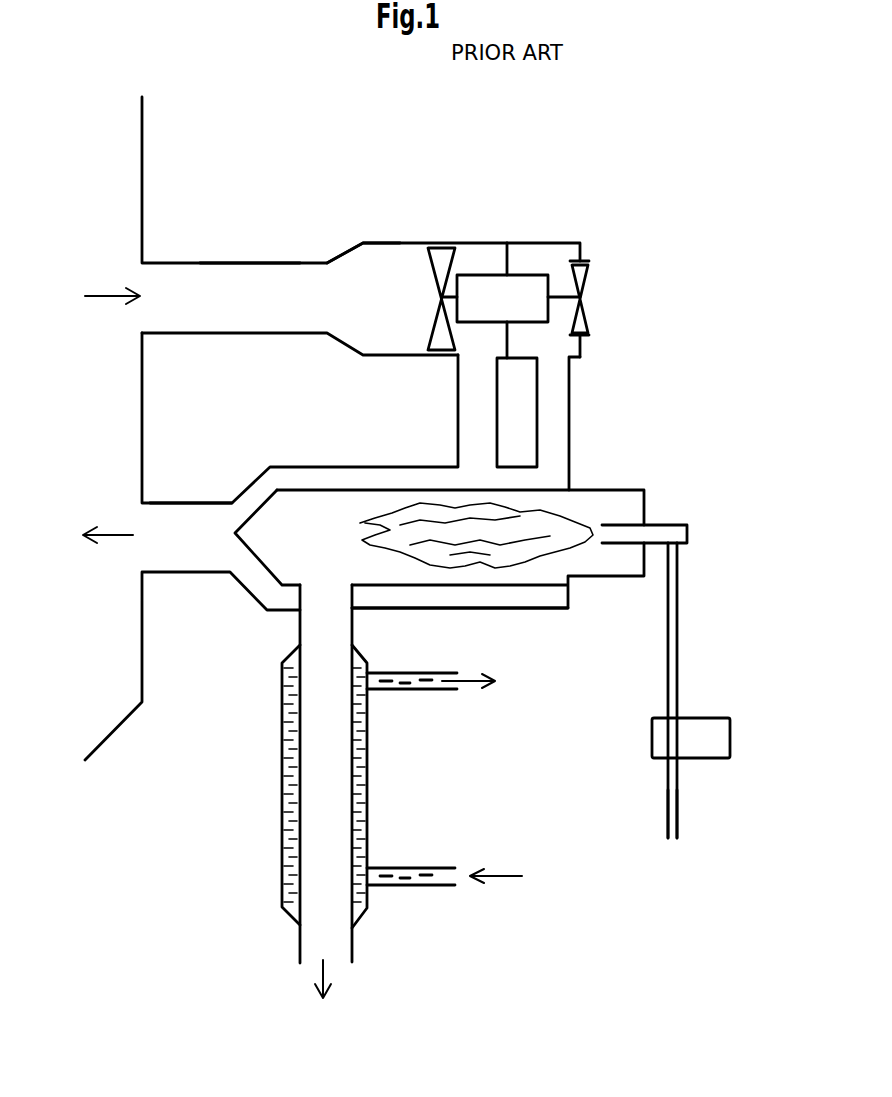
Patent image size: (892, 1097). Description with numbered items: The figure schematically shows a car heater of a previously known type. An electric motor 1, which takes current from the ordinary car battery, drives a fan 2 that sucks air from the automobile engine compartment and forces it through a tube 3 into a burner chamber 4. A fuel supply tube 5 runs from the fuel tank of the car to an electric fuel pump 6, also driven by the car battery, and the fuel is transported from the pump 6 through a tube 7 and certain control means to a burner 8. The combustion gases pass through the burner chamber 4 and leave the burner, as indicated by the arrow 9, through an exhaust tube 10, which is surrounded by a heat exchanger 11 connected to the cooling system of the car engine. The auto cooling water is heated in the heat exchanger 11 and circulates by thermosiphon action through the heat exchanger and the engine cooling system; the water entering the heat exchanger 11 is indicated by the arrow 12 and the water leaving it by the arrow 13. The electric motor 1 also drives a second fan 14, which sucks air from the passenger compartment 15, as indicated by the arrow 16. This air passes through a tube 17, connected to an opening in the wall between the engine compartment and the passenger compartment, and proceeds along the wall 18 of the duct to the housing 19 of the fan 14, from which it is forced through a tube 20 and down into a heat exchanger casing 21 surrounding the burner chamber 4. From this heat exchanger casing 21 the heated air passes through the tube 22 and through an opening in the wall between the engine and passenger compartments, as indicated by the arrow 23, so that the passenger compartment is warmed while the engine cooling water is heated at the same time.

The electric motor 1 is at (515, 288).
The fan 2 is at (586, 321).
The tube 3 is at (569, 395).
The burner chamber 4 is at (307, 490).
The fuel supply tube 5 is at (677, 810).
The electric fuel pump 6 is at (708, 727).
The tube 7 is at (677, 629).
The burner 8 is at (662, 525).
The arrow 9 is at (323, 968).
The exhaust tube 10 is at (352, 632).
The heat exchanger 11 is at (367, 765).
The arrow 12 is at (487, 874).
The arrow 13 is at (470, 683).
The fan 14 is at (440, 258).
The passenger compartment 15 is at (260, 296).
The arrow 16 is at (95, 298).
The tube 17 is at (213, 263).
The duct outer wall 18 is at (142, 165).
The housing 19 is at (378, 243).
The tube 20 is at (458, 403).
The heat exchanger casing 21 is at (242, 587).
The tube 22 is at (207, 503).
The arrow 23 is at (107, 533).